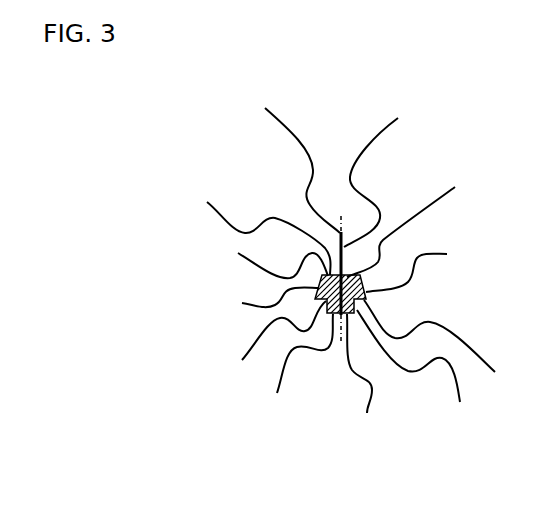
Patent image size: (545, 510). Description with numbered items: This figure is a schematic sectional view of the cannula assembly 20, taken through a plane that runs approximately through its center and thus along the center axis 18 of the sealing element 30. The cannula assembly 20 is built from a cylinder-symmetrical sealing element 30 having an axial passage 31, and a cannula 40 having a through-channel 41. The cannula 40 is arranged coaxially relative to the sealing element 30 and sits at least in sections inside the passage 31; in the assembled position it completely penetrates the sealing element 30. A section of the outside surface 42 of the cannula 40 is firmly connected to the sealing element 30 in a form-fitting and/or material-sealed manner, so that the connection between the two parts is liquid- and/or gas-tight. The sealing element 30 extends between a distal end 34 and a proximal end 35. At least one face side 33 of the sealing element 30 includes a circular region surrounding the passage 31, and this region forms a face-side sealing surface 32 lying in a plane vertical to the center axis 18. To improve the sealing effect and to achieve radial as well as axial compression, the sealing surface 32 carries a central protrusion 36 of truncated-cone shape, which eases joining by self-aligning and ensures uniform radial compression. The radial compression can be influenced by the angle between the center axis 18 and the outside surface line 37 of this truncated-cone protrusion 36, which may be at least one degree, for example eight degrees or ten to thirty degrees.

The cannula assembly 20 is at (312, 66).
The center axis 18 is at (291, 155).
The cannula 40 is at (385, 167).
The outside surface 42 is at (417, 223).
The sealing element 30 is at (428, 268).
The channel 41 is at (252, 222).
The distal end 34 is at (260, 258).
The passage 31 is at (261, 304).
The face side sealing surface 32 is at (269, 349).
The protrusion 36 is at (295, 373).
The proximal end 35 is at (364, 385).
The outside surface line 37 is at (420, 375).
The face side 33 is at (448, 351).